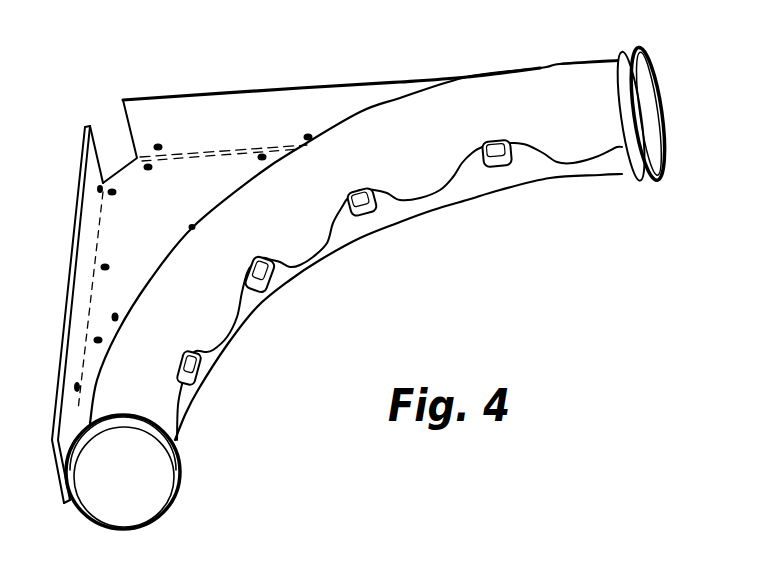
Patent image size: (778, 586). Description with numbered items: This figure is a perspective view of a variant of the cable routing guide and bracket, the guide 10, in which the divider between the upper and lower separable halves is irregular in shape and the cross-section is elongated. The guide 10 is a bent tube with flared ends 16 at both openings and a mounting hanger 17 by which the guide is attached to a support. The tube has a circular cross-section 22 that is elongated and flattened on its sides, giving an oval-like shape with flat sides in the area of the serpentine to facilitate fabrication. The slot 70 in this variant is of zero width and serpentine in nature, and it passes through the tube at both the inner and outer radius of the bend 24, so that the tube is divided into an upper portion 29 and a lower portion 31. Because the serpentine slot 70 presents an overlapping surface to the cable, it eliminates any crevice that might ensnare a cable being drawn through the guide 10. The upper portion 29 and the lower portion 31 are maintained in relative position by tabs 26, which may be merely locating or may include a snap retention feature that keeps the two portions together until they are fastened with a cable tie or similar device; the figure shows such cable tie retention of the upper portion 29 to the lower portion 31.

The guide 10 is at (241, 81).
The flared ends 16 is at (642, 100).
The mounting hanger 17 is at (273, 113).
The circular cross-section 22 is at (72, 509).
The bend 24 is at (300, 230).
The tabs 26 is at (273, 282).
The upper portion 29 is at (582, 143).
The lower portion 31 is at (250, 308).
The slot 70 is at (460, 180).